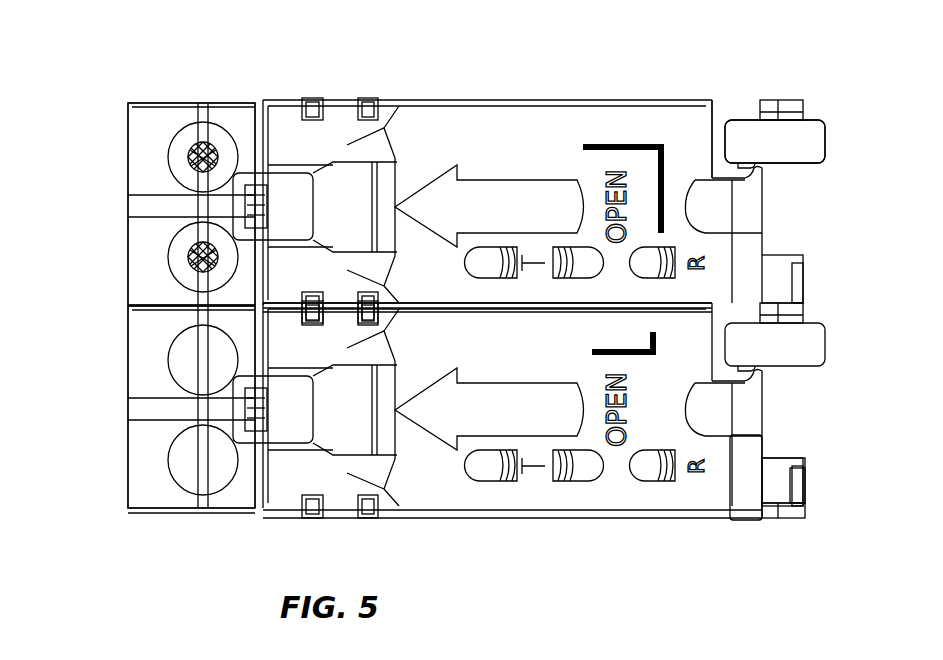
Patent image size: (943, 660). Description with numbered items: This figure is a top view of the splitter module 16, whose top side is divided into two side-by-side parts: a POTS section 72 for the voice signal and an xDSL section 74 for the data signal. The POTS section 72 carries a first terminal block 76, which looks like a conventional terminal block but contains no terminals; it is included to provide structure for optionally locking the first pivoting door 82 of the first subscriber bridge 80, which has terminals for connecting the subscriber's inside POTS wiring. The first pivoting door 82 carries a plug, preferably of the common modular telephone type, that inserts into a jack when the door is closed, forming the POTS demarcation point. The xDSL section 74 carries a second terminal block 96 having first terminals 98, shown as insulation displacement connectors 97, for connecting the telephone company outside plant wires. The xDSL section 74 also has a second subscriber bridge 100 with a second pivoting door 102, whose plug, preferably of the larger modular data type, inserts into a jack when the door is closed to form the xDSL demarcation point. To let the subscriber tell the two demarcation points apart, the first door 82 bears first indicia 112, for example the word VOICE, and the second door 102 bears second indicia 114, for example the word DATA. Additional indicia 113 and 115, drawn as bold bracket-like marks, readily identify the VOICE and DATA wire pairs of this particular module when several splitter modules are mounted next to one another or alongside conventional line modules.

The connector assembly 16 is at (183, 548).
The POTS section 72 is at (853, 315).
The xDSL section 74 is at (853, 98).
The first terminal block 76 is at (128, 355).
The first subscriber bridge 80 is at (730, 520).
The first pivoting door 82 is at (430, 493).
The second terminal block 96 is at (128, 157).
The insulation displacement connectors 97 is at (190, 150).
The first terminals 98 is at (205, 250).
The second subscriber bridge 100 is at (712, 110).
The second pivoting door 102 is at (428, 110).
The first indicia 112 is at (587, 340).
The indicia 113 is at (660, 338).
The second indicia 114 is at (525, 112).
The indicia 115 is at (620, 142).